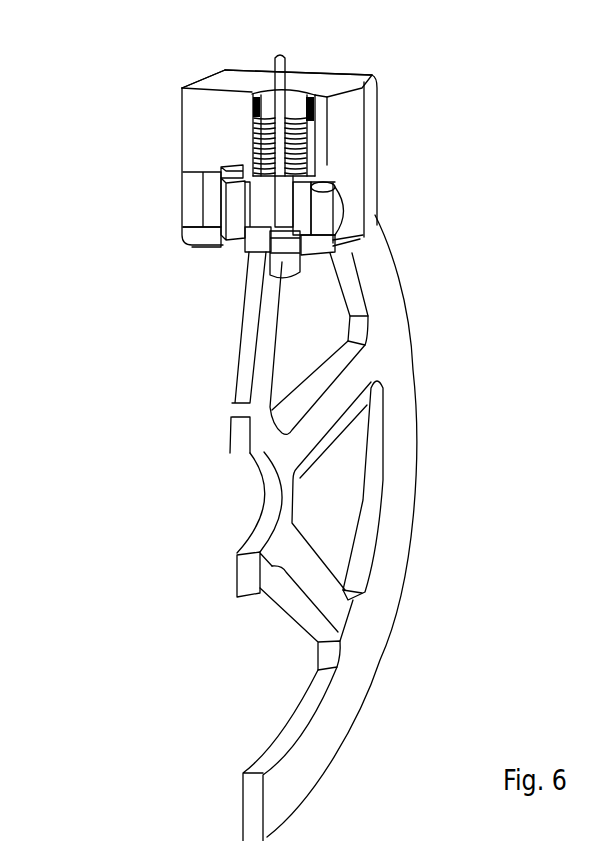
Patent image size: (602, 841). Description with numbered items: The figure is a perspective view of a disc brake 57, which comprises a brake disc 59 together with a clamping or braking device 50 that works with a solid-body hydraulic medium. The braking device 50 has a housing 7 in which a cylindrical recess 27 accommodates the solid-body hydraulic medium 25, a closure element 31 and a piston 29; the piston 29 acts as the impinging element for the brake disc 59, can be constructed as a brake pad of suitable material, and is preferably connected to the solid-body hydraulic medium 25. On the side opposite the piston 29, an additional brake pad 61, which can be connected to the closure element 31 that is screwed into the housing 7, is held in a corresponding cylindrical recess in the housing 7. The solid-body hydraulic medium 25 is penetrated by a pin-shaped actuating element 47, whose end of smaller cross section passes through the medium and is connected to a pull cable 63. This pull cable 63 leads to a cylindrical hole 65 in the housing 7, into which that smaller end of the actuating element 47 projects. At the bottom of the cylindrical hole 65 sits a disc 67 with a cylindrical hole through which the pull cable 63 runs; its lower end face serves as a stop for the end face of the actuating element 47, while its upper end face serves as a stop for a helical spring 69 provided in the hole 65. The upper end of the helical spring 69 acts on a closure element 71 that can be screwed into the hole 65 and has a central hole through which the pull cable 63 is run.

The housing 7 is at (367, 117).
The solid-body hydraulic medium 25 is at (268, 208).
The cylindrical recess 27 is at (325, 188).
The piston 29 is at (222, 165).
The closure element 31 is at (195, 188).
The pin-shaped actuating element 47 is at (297, 263).
The clamping or braking device 50 is at (312, 69).
The disc brake 57 is at (422, 210).
The brake disc 59 is at (405, 337).
The additional brake pad 61 is at (213, 198).
The pull cable 63 is at (275, 63).
The cylindrical hole 65 is at (312, 158).
The disc 67 is at (250, 150).
The helical spring 69 is at (350, 97).
The closure element 71 is at (242, 98).